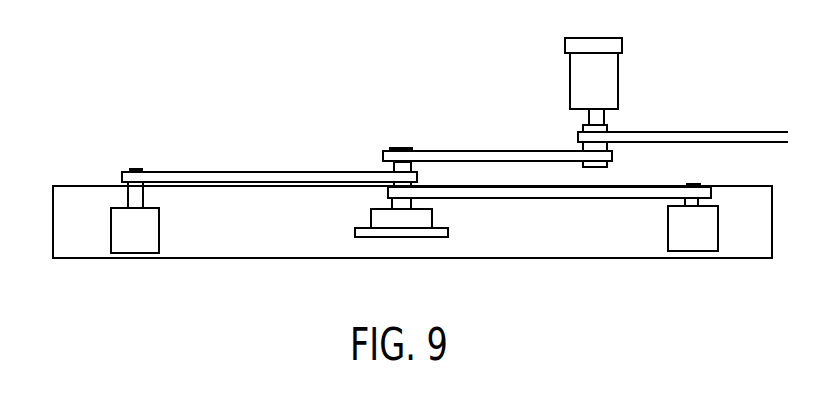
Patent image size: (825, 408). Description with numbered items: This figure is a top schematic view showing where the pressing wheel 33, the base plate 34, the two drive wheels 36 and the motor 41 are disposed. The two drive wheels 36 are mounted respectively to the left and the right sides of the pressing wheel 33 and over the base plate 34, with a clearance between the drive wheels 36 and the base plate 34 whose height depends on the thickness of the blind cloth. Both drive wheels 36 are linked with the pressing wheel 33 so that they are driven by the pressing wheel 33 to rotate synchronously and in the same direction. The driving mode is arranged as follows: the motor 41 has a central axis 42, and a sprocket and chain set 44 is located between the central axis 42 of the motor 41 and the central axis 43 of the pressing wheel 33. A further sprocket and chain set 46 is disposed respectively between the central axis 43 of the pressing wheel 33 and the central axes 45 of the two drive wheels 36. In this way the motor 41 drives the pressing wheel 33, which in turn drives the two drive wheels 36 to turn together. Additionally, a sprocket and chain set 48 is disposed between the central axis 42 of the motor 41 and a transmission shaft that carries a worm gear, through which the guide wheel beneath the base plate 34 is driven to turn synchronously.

The pressing wheel 33 is at (397, 222).
The base plate 34 is at (567, 230).
The drive wheels 36 is at (150, 232).
The motor 41 is at (600, 85).
The central axis of the motor 42 is at (598, 113).
The central axis of the pressing wheel 43 is at (402, 148).
The sprocket and chain set 44 is at (517, 152).
The central axes of the drive wheels 45 is at (135, 170).
The sprocket and chain set 46 is at (235, 172).
The sprocket and chain set 48 is at (725, 138).